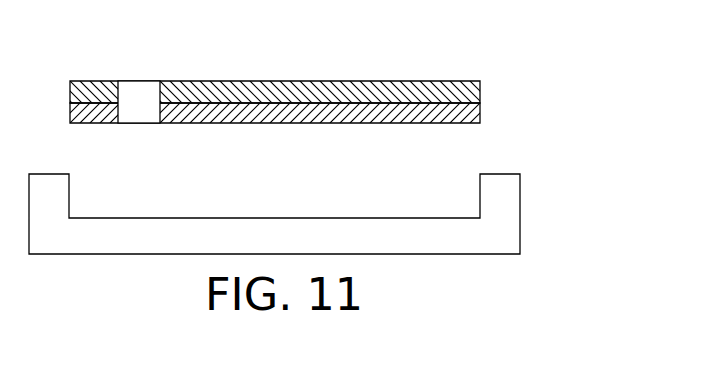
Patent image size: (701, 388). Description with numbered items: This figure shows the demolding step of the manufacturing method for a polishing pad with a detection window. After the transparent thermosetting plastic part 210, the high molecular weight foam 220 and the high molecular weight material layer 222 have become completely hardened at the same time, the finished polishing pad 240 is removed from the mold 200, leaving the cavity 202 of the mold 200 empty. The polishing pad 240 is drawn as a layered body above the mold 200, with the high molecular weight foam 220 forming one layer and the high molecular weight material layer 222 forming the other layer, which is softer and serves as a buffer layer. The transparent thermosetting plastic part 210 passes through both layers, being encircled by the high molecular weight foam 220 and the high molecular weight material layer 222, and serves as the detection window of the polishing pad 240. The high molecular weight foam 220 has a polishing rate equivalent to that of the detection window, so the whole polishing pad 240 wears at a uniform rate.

The mold 200 is at (321, 180).
The cavity 202 is at (381, 184).
The transparent thermosetting plastic part 210 is at (139, 81).
The high molecular weight foam 220 is at (383, 81).
The high molecular weight material layer 222 is at (282, 81).
The polishing pad 240 is at (296, 64).